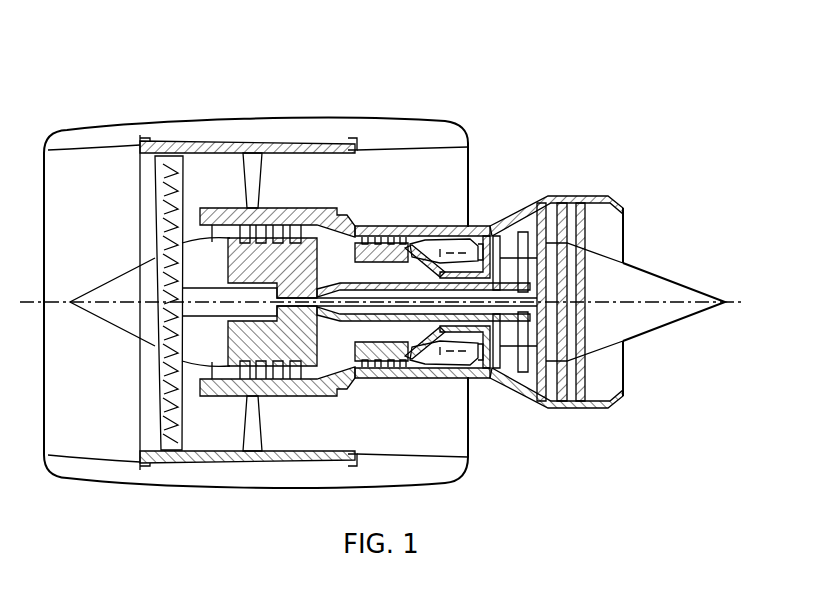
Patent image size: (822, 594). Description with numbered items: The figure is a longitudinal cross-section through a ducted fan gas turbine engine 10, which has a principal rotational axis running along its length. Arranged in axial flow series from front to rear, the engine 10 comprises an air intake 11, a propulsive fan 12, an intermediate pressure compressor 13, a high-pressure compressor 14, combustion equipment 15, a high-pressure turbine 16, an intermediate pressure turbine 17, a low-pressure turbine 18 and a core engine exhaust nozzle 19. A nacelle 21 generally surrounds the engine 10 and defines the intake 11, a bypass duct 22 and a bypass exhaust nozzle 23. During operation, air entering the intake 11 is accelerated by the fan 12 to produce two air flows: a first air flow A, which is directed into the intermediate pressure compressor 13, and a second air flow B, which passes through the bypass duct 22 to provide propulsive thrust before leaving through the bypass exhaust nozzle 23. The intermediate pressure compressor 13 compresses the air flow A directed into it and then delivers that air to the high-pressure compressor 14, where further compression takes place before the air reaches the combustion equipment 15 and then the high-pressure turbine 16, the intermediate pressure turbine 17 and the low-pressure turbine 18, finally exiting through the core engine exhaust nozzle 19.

The ducted fan gas turbine engine 10 is at (82, 86).
The air intake 11 is at (90, 148).
The propulsive fan 12 is at (160, 418).
The intermediate pressure compressor 13 is at (291, 382).
The high-pressure compressor 14 is at (388, 238).
The combustion equipment 15 is at (413, 387).
The high-pressure turbine 16 is at (440, 365).
The intermediate pressure turbine 17 is at (517, 211).
The low-pressure turbine 18 is at (530, 403).
The core engine exhaust nozzle 19 is at (615, 199).
The nacelle 21 is at (291, 118).
The bypass duct 22 is at (429, 184).
The bypass exhaust nozzle 23 is at (470, 143).
The first air flow A is at (205, 228).
The second air flow B is at (215, 181).